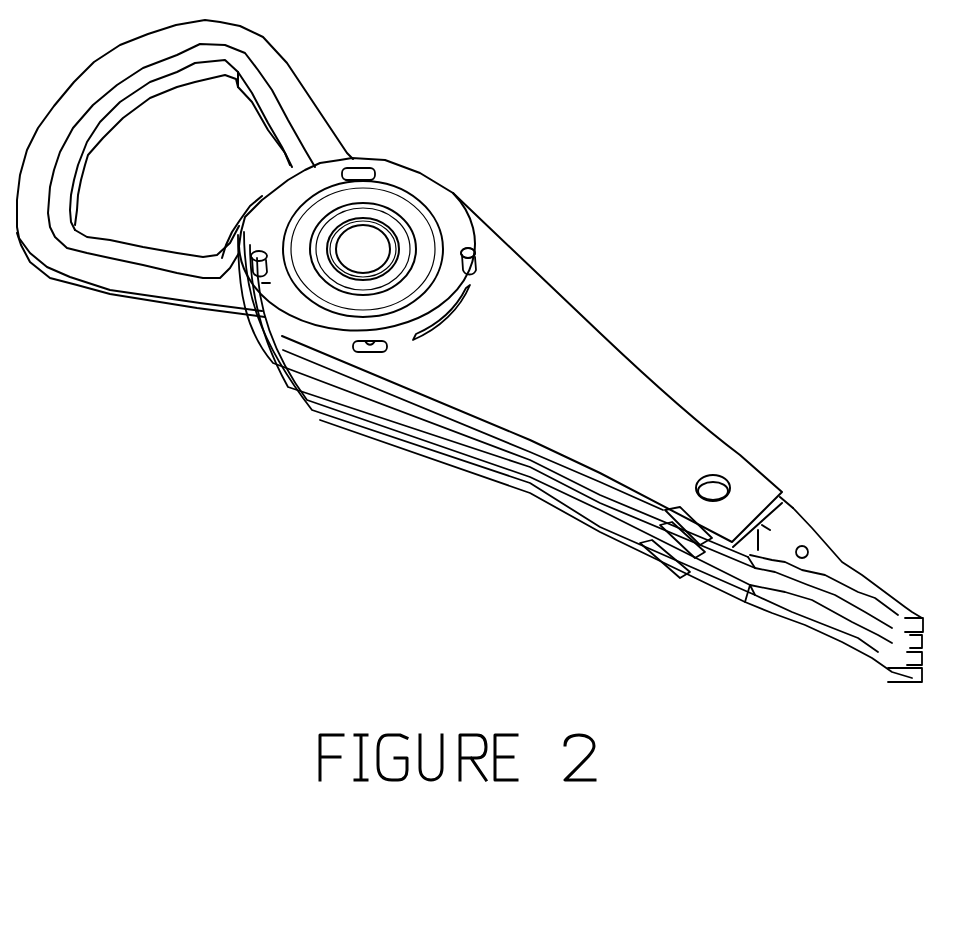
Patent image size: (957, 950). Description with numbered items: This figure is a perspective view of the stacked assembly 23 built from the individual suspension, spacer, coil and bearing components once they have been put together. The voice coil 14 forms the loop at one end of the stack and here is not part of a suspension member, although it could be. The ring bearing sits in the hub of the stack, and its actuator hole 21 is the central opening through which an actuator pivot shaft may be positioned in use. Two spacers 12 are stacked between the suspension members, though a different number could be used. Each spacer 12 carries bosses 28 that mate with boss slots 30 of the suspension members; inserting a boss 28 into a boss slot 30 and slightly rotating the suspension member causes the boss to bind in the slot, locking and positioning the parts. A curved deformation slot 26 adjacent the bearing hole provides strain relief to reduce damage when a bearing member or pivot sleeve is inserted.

The spacer 12 is at (315, 370).
The voice coil 14 is at (100, 270).
The actuator hole 21 is at (383, 243).
The stacked assembly 23 is at (718, 366).
The deformation slot 26 is at (453, 323).
The boss 28 is at (250, 255).
The boss slot 30 is at (365, 166).